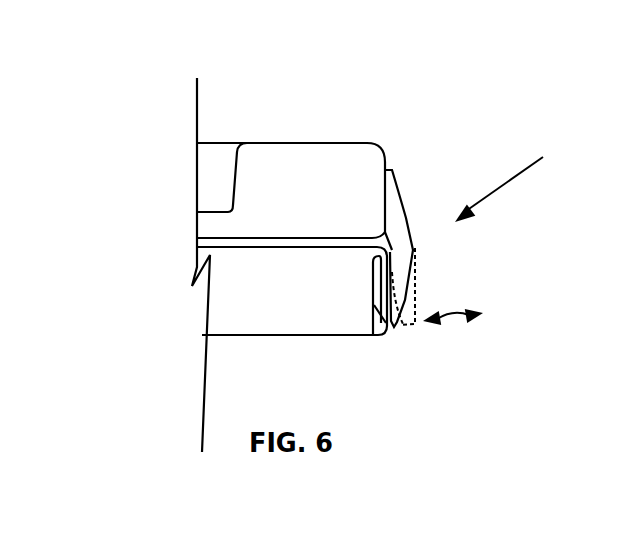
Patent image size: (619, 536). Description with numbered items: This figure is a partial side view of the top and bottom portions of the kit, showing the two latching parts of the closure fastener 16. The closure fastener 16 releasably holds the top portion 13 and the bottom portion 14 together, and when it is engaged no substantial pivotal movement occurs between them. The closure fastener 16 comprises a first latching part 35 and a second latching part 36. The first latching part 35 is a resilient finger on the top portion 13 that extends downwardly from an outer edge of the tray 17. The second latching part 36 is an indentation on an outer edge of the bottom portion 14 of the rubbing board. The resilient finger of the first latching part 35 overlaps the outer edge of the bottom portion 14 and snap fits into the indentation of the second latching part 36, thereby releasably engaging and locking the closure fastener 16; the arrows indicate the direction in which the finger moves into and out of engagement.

The top portion 13 is at (277, 142).
The bottom portion 14 is at (222, 337).
The closure fastener 16 is at (516, 177).
The tray 17 is at (350, 167).
The first latching part 35 is at (392, 213).
The second latching part 36 is at (373, 335).